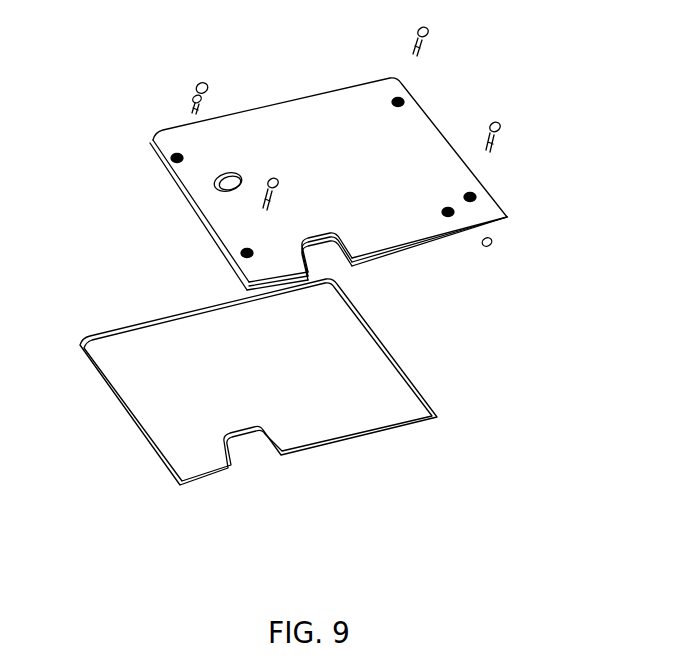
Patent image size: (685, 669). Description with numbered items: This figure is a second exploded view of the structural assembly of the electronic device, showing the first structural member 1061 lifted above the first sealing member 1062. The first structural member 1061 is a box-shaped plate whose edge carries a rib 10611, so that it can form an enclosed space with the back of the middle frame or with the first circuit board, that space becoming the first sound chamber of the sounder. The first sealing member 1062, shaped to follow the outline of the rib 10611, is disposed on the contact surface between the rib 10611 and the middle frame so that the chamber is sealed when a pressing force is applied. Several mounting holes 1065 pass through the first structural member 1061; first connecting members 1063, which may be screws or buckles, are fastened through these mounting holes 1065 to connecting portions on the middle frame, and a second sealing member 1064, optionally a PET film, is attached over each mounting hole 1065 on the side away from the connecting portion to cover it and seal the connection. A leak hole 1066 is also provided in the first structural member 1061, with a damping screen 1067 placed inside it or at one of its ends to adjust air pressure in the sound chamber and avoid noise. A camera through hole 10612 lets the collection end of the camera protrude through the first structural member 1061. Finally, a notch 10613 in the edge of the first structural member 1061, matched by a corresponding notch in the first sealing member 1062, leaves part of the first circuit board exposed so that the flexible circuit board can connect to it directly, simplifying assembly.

The first structural member 1061 is at (332, 117).
The first sealing member 1062 is at (357, 443).
The first connecting member 1063 is at (192, 100).
The second sealing member 1064 is at (197, 82).
The mounting hole 1065 is at (166, 161).
The leak hole 1066 is at (455, 215).
The damping screen 1067 is at (492, 245).
The rib 10611 is at (210, 242).
The camera through hole 10612 is at (217, 180).
The notch 10613 is at (337, 262).